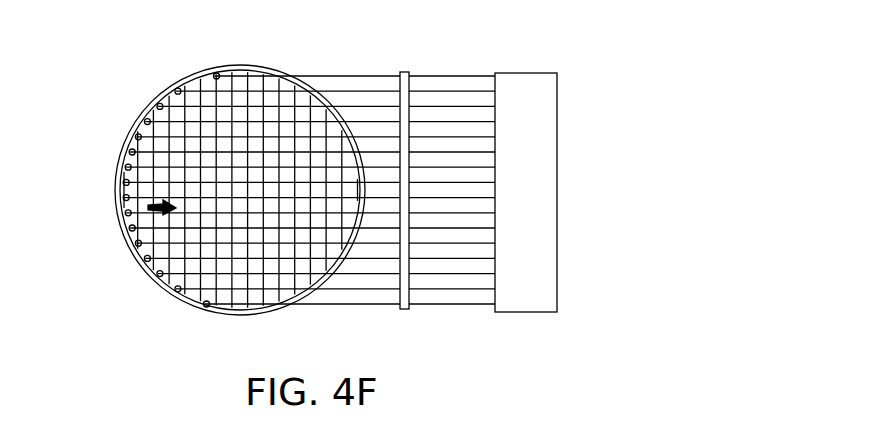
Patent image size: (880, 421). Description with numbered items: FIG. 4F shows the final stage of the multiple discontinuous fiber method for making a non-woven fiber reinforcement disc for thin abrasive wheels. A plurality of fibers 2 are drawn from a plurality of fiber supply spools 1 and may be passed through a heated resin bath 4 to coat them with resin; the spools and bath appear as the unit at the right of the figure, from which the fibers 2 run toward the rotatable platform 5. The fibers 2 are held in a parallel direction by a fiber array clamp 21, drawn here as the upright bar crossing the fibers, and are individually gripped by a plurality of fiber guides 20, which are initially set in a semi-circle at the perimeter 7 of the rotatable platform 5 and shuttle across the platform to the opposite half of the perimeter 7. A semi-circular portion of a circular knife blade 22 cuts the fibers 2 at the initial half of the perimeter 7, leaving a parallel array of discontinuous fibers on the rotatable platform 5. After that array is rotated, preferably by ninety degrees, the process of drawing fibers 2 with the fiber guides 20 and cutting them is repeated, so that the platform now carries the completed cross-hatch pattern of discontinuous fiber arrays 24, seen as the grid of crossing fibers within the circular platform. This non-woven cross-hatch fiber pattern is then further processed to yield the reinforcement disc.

The fiber supply spool 1 is at (531, 157).
The heated resin bath 4 is at (531, 72).
The fiber 2 is at (348, 306).
The rotatable platform 5 is at (241, 190).
The perimeter 7 is at (152, 113).
The fiber guide 20 is at (300, 81).
The fiber array clamp 21 is at (408, 310).
The circular knife blade 22 is at (155, 282).
The cross-hatch pattern of discontinuous fiber arrays 24 is at (150, 208).